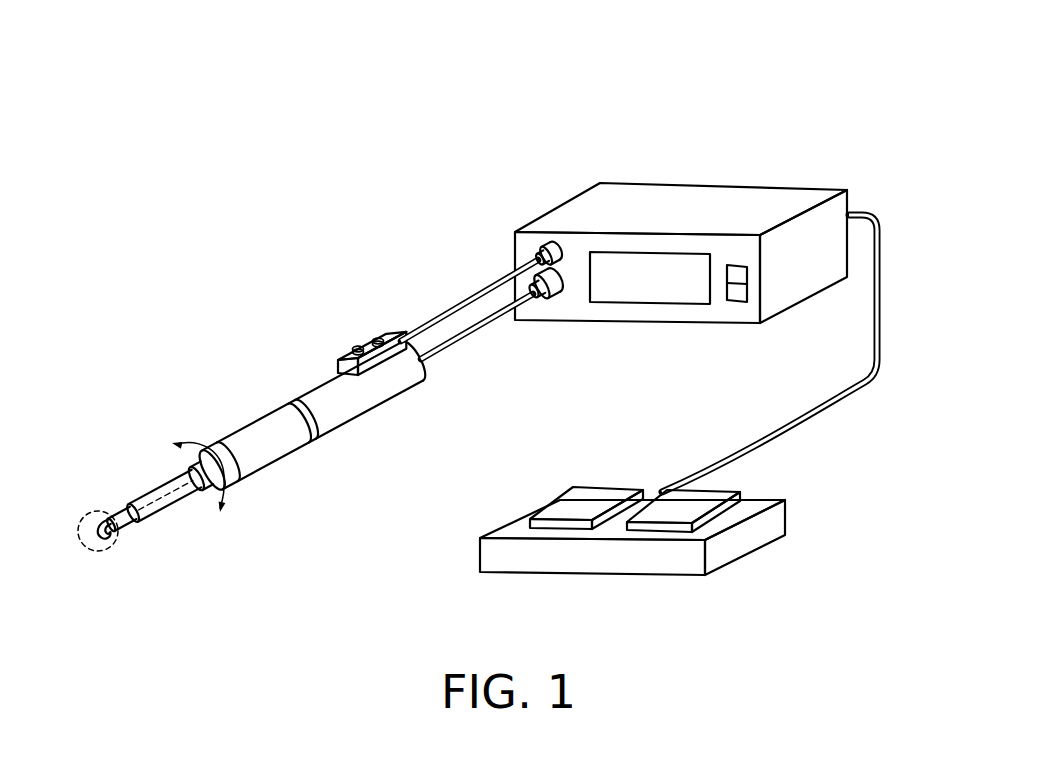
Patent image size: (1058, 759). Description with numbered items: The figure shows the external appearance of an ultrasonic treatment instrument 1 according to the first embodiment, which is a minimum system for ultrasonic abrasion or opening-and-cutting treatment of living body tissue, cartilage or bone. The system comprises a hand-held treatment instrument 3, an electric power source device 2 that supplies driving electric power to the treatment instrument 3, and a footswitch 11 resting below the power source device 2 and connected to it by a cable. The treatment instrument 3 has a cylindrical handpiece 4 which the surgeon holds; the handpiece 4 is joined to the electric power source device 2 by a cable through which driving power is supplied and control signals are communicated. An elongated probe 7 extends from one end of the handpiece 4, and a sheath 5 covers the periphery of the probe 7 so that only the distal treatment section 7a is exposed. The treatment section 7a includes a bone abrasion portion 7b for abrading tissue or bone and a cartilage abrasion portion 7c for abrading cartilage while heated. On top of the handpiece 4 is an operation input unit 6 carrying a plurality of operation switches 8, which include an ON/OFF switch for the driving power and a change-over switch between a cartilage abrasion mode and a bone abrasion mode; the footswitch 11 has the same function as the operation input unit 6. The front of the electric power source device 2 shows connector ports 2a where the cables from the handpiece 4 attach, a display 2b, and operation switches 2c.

The ultrasonic treatment instrument 1 is at (618, 80).
The electric power source device 2 is at (752, 185).
The connector ports 2a is at (554, 322).
The display 2b is at (652, 298).
The operation switches 2c is at (738, 302).
The treatment instrument 3 is at (238, 393).
The handpiece 4 is at (383, 392).
The sheath 5 is at (143, 494).
The operation input unit 6 is at (338, 358).
The probe 7 is at (110, 515).
The treatment section 7a is at (98, 556).
The bone abrasion portion 7b is at (106, 540).
The cartilage abrasion portion 7c is at (97, 523).
The operation switches 8 is at (358, 346).
The footswitch 11 is at (712, 496).